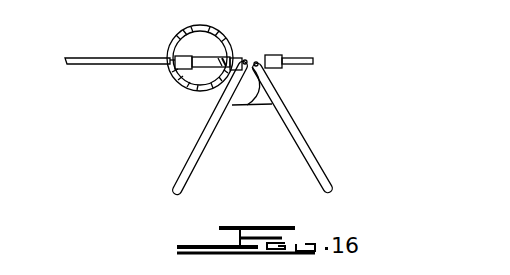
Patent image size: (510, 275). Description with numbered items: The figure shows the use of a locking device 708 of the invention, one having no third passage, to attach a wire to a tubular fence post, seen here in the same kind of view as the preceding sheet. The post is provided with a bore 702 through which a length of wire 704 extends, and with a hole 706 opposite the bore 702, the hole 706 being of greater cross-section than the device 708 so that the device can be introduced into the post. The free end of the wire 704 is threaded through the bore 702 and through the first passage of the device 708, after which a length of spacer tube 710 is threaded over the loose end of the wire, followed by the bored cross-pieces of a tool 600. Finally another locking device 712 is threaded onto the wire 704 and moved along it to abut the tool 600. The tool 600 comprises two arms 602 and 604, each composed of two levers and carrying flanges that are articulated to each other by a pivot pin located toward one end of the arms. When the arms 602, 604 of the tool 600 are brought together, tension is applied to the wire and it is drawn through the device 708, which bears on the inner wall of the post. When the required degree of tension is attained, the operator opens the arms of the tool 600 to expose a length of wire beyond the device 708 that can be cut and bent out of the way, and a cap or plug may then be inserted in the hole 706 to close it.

The tool 600 is at (320, 143).
The arm 602 is at (314, 171).
The arm 604 is at (184, 178).
The bore 702 is at (170, 62).
The wire 704 is at (72, 66).
The hole 706 is at (236, 57).
The device 708 is at (174, 76).
The spacer tube 710 is at (212, 66).
The locking device 712 is at (281, 58).